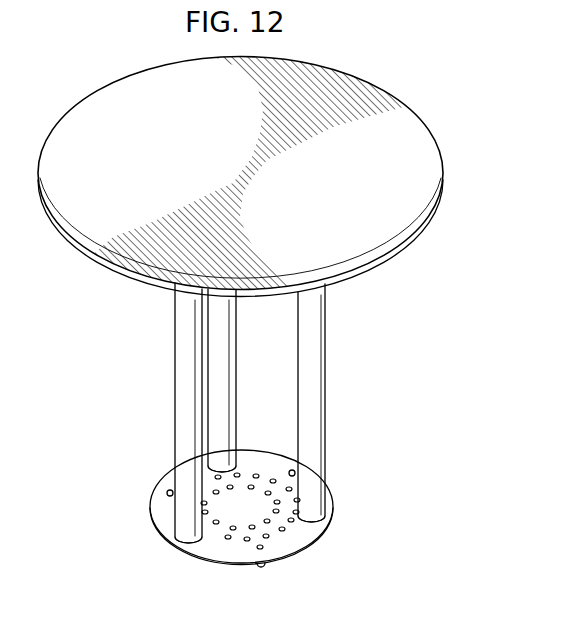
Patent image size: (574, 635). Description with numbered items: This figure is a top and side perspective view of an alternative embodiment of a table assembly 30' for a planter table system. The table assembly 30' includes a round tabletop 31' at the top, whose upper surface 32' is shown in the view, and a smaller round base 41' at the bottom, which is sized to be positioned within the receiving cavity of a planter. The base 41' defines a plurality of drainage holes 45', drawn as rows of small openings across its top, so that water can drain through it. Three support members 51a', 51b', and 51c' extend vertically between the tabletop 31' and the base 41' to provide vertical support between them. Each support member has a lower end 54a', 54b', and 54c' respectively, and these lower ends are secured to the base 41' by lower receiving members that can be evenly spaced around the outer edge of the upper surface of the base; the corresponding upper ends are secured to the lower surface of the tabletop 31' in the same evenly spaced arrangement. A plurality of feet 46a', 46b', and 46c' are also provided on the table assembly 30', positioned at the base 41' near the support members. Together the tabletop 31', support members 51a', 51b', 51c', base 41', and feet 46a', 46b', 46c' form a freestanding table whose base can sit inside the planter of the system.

The table assembly 30' is at (268, 314).
The tabletop 31' is at (268, 177).
The upper surface 32' is at (234, 189).
The base 41' is at (245, 515).
The drainage holes 45' is at (271, 542).
The foot 46a' is at (271, 444).
The foot 46b' is at (130, 504).
The foot 46c' is at (271, 590).
The support member 51a' is at (247, 380).
The support member 51b' is at (149, 413).
The support member 51c' is at (352, 403).
The lower end 54a' is at (172, 449).
The lower end 54b' is at (149, 544).
The lower end 54c' is at (351, 522).